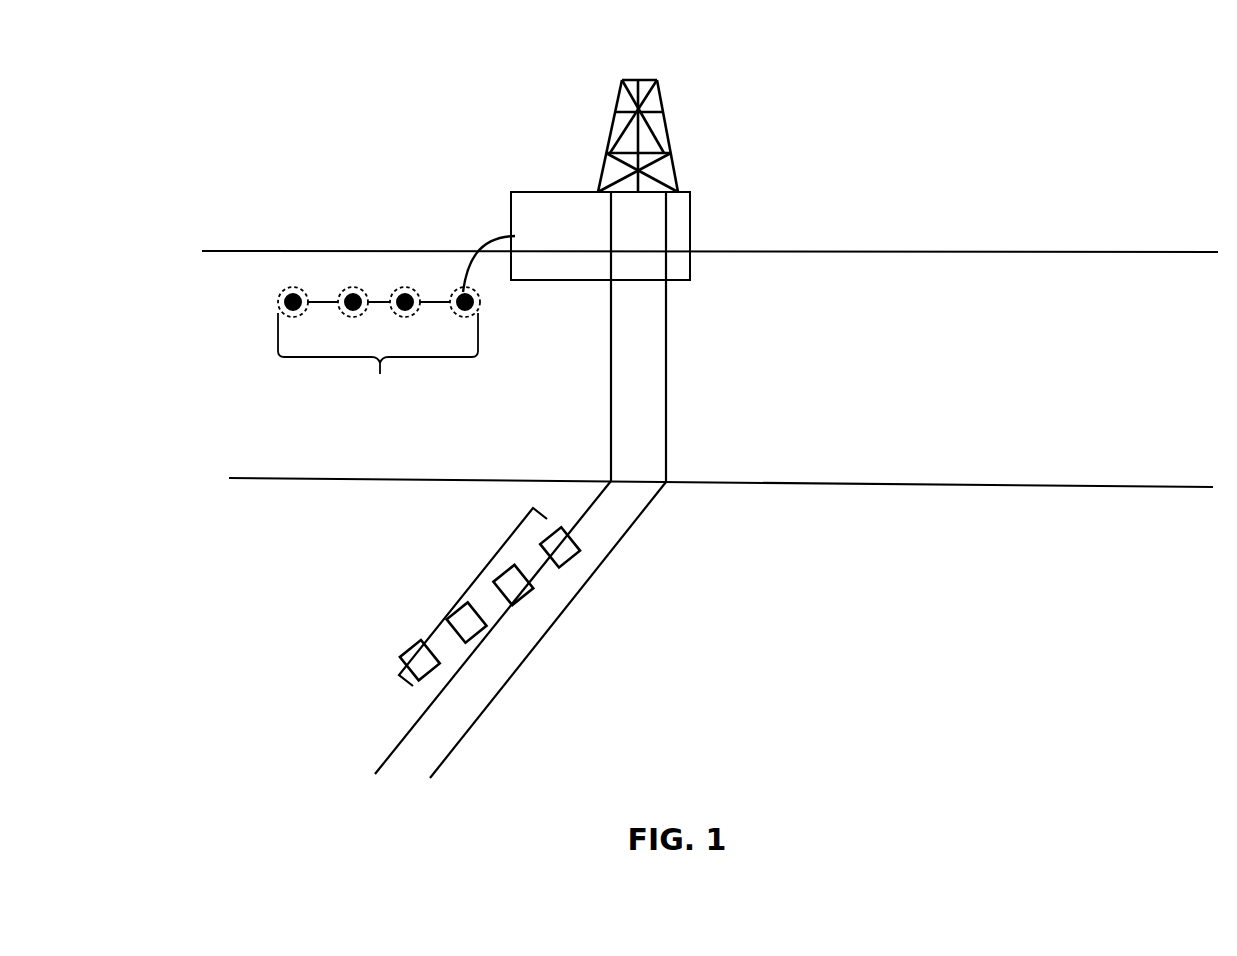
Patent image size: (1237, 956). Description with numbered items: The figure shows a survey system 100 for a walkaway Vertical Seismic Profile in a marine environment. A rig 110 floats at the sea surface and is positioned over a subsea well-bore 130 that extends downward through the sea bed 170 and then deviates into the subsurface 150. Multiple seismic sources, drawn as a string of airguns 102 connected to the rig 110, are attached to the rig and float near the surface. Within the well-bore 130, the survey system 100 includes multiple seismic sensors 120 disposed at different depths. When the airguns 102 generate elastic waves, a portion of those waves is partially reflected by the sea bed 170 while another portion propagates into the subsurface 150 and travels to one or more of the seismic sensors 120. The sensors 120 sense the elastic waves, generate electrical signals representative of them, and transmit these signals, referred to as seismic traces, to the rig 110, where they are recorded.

The survey system 100 is at (212, 70).
The rig 110 is at (617, 97).
The airguns 102 is at (396, 319).
The sea bed 170 is at (345, 478).
The subsurface 150 is at (1005, 601).
The well-bore 130 is at (640, 523).
The seismic sensors 120 is at (462, 602).